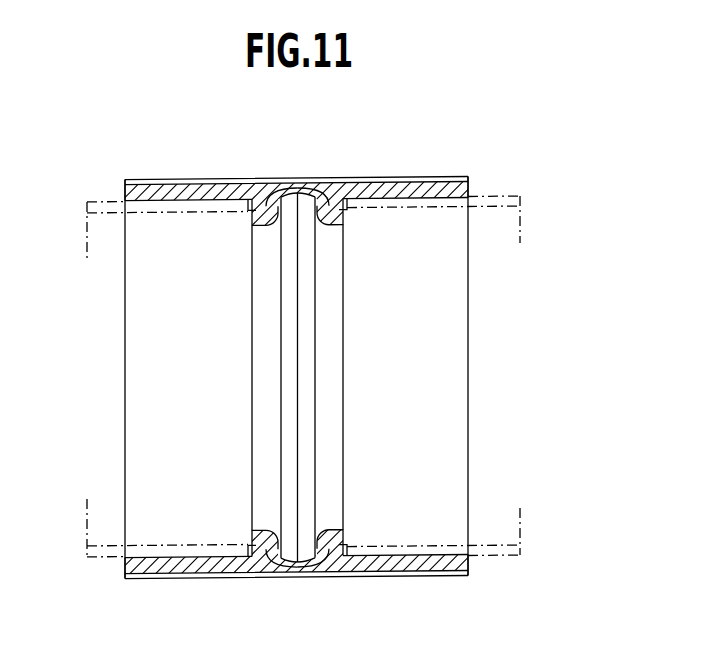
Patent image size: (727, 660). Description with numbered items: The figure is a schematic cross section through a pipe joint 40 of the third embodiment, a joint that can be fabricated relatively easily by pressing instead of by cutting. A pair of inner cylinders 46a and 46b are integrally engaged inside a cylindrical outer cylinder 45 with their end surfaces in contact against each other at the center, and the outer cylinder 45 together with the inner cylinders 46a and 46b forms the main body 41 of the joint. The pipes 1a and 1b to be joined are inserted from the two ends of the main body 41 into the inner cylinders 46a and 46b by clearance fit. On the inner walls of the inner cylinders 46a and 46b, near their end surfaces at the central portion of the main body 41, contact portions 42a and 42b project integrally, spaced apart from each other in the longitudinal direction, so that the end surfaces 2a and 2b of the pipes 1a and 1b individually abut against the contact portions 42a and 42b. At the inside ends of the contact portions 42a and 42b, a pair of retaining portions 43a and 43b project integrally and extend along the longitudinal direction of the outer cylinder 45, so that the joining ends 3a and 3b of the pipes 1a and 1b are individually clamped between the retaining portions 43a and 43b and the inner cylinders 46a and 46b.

The pipe 1a is at (483, 555).
The pipe 1b is at (96, 560).
The end surface of pipe 2a is at (323, 577).
The end surface of pipe 2b is at (267, 575).
The joining end of pipe 3a is at (345, 200).
The joining end of pipe 3b is at (254, 204).
The pipe joint 40 is at (512, 268).
The main body 41 is at (478, 178).
The contact portion 42a is at (319, 196).
The contact portion 42b is at (270, 196).
The retaining portion 43a is at (338, 218).
The retaining portion 43b is at (251, 218).
The outer cylinder 45 is at (402, 190).
The inner cylinder 46a is at (437, 190).
The inner cylinder 46b is at (143, 192).